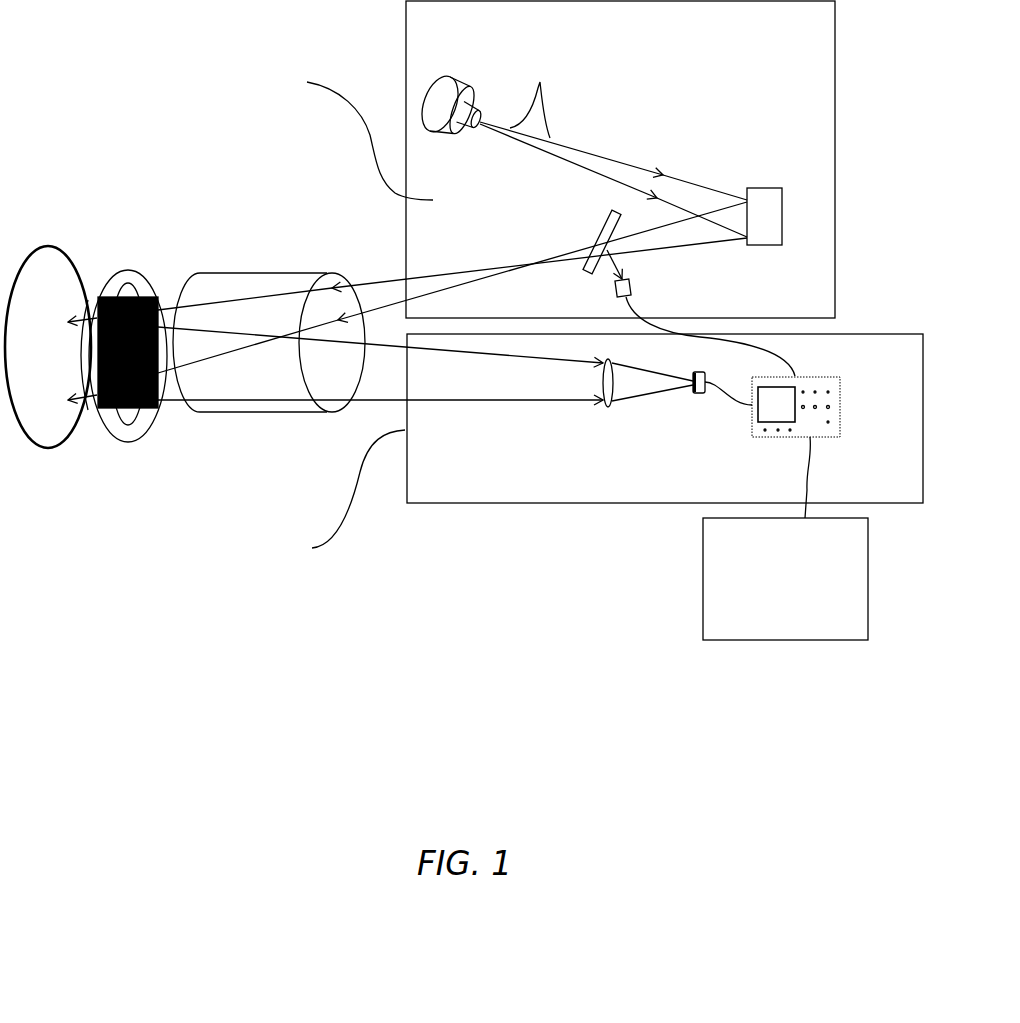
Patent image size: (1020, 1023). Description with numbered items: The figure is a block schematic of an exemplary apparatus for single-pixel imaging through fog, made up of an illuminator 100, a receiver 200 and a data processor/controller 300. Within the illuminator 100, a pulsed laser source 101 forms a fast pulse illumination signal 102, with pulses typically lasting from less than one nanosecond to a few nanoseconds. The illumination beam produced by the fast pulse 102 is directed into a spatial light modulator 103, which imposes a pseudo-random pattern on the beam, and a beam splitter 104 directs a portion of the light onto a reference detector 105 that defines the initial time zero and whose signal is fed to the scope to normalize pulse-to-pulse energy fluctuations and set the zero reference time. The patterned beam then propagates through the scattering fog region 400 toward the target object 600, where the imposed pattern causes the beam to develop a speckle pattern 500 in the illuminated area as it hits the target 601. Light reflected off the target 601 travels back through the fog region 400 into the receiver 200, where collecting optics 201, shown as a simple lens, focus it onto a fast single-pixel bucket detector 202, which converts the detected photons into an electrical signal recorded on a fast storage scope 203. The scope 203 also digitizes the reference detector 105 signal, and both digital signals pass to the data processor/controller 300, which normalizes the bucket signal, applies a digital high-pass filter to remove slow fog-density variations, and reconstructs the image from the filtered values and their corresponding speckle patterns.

The illuminator 100 is at (542, 159).
The pulsed laser source 101 is at (581, 145).
The fast pulse illumination signal 102 is at (554, 97).
The spatial light modulator (SLM) 103 is at (783, 204).
The beam splitter 104 is at (595, 233).
The reference detector 105 is at (687, 313).
The receiver 200 is at (578, 444).
The collecting optic system 201 is at (631, 421).
The fast bucket detector 202 is at (700, 411).
The fast storage scope 203 is at (831, 437).
The data processor/controller 300 is at (785, 579).
The fog region 400 is at (269, 315).
The speckle pattern 500 is at (129, 403).
The target object 600 is at (48, 323).
The target 601 is at (61, 353).